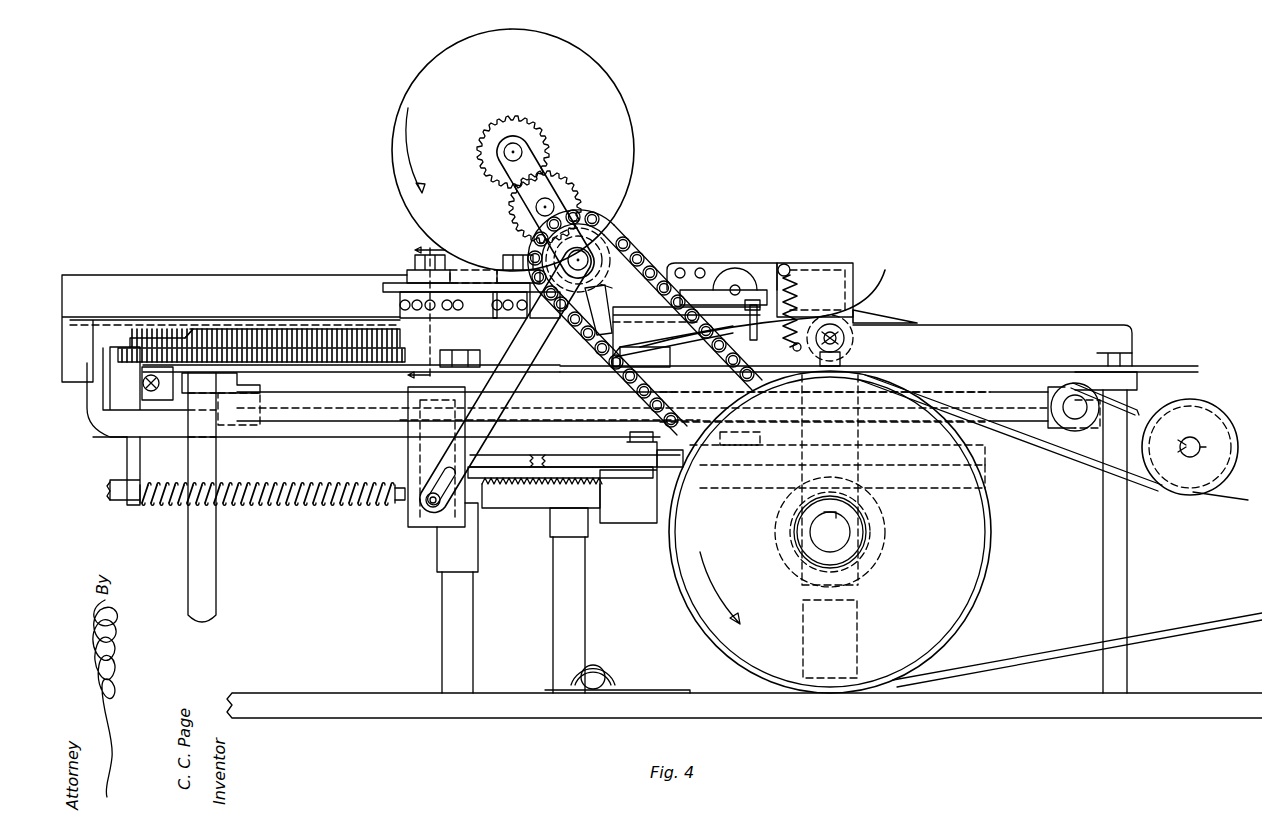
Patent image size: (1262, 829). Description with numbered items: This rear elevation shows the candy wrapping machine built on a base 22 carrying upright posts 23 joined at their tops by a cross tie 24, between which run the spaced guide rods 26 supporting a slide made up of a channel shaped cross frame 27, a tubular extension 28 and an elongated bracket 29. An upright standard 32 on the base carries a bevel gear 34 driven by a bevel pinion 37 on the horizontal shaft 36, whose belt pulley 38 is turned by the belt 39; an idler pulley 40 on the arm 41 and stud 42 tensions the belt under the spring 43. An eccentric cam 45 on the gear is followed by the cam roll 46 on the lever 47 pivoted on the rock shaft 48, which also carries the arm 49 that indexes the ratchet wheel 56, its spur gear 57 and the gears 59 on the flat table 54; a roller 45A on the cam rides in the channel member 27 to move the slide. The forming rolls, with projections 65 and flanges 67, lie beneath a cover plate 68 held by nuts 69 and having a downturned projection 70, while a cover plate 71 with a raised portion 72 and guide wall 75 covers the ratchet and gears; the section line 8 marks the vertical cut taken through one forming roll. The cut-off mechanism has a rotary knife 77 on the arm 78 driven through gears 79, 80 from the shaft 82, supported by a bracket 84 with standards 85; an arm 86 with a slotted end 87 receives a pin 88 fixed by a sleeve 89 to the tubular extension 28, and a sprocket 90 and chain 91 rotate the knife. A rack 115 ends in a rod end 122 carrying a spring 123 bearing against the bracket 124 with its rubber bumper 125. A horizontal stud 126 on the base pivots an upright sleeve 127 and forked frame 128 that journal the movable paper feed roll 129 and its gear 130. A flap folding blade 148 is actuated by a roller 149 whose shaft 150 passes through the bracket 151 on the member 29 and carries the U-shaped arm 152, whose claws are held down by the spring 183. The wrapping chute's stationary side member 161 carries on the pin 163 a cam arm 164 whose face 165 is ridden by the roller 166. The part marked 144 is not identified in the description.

The section line 8— 8 is at (416, 310).
The base 22 is at (744, 705).
The upright posts 23 is at (657, 533).
The cross tie 24 is at (221, 398).
The guide rods 26 is at (642, 406).
The channel shaped cross frame 27 is at (745, 453).
The tubular extension 28 is at (550, 408).
The elongated bracket 29 is at (232, 437).
The upright standard 32 is at (856, 629).
The bevel gear 34 is at (918, 486).
The horizontal shaft 36 is at (830, 532).
The bevel pinion 37 is at (885, 537).
The belt pulley 38 is at (982, 592).
The belt 39 is at (1072, 636).
The idler pulley 40 is at (1195, 449).
The arm 41 is at (1142, 412).
The stud 42 is at (1185, 453).
The spring 43 is at (1068, 430).
The eccentric cam 45 is at (930, 458).
The roller 45A is at (742, 442).
The cam roll 46 is at (666, 500).
The lever 47 is at (560, 469).
The rock shaft 48 is at (457, 632).
The arm 49 is at (186, 413).
The flat table 54 is at (976, 365).
The ratchet wheel 56 is at (314, 352).
The large spur gear 57 is at (263, 330).
The gears 59 is at (467, 367).
The projections 65 is at (400, 303).
The flanges 67 is at (383, 287).
The cover plate 68 is at (412, 264).
The nuts 69 is at (519, 258).
The downturned projection 70 is at (495, 272).
The cover plate 71 is at (219, 323).
The raised portion 72 is at (162, 266).
The guide wall 75 is at (544, 305).
The rotary knife 77 is at (513, 150).
The arm 78 is at (545, 207).
The gear 79 is at (549, 148).
The gear 80 is at (574, 187).
The shaft 82 is at (578, 260).
The bracket 84 is at (573, 343).
The standards 85 is at (598, 310).
The arm 86 is at (505, 379).
The slotted end 87 is at (430, 506).
The pin 88 is at (457, 537).
The sleeve 89 is at (436, 457).
The sprocket 90 is at (612, 288).
The chain 91 is at (650, 270).
The rack 115 is at (542, 493).
The rod end 122 is at (268, 484).
The spring 123 is at (326, 505).
The bracket 124 is at (140, 461).
The rubber bumper 125 is at (118, 501).
The horizontal stud 126 is at (612, 672).
The upright sleeve 127 is at (569, 615).
The forked frame 128 is at (548, 515).
The movable paper feed roll 129 is at (545, 462).
The gear 130 is at (532, 452).
The lever 144 is at (748, 316).
The flap folding blade 148 is at (626, 380).
The roller 149 is at (852, 345).
The shaft 150 is at (846, 338).
The bracket 151 is at (780, 340).
The U-shaped arm 152 is at (815, 290).
The stationary side member 161 is at (992, 339).
The pin 163 is at (619, 290).
The cam arm 164 is at (759, 297).
The face 165 is at (778, 308).
The roller 166 is at (735, 280).
The spring 183 is at (798, 301).